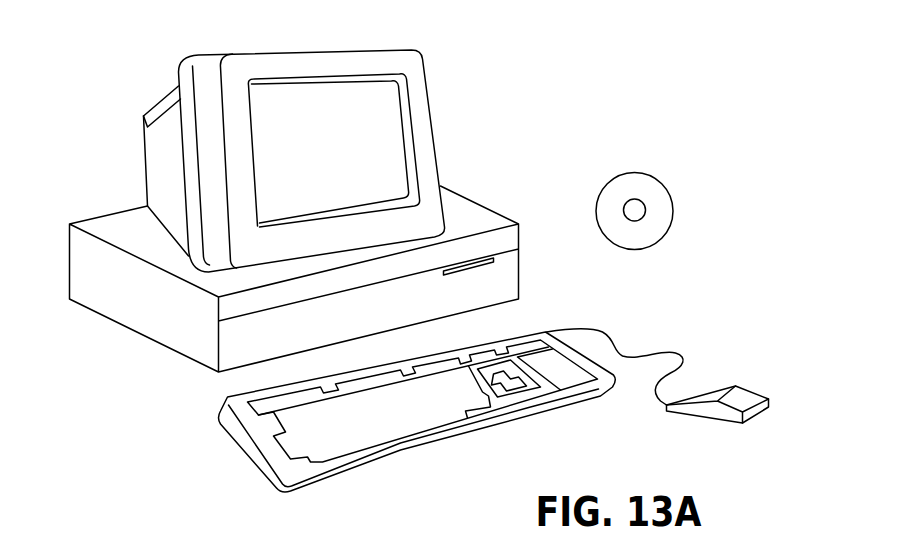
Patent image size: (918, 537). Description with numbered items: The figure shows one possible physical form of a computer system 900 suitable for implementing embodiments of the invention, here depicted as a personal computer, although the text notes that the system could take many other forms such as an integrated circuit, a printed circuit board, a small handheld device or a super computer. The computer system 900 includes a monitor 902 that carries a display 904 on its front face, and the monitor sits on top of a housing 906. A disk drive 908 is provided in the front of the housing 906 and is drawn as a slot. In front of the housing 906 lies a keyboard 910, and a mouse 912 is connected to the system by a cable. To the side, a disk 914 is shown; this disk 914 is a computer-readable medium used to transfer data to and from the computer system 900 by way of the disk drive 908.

The computer system 900 is at (549, 94).
The monitor 902 is at (435, 137).
The display 904 is at (396, 110).
The housing 906 is at (173, 356).
The disk drive 908 is at (493, 258).
The keyboard 910 is at (500, 428).
The mouse 912 is at (747, 397).
The disk 914 is at (652, 175).